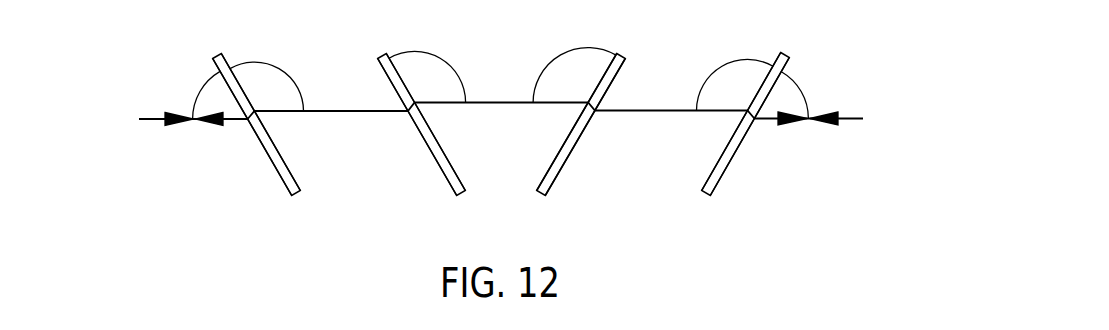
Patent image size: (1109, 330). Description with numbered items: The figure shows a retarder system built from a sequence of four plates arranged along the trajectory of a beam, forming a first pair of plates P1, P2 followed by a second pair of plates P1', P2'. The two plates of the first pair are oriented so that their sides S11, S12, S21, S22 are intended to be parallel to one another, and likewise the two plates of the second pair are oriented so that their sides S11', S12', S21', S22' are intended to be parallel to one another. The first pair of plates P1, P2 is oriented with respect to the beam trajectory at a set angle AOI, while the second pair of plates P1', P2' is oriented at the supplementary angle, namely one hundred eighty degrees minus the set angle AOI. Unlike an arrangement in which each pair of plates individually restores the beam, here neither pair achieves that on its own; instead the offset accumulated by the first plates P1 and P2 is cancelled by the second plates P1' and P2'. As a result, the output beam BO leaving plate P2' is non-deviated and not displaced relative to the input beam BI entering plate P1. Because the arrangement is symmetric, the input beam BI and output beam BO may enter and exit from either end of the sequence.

The plate P1 is at (212, 102).
The plate P2 is at (378, 102).
The plate P1' is at (628, 101).
The plate P2' is at (792, 101).
The side S11 is at (252, 159).
The side S12 is at (313, 122).
The side S21 is at (417, 159).
The side S22 is at (451, 154).
The side S11' is at (534, 122).
The side S12' is at (585, 160).
The side S21' is at (691, 122).
The side S22' is at (751, 159).
The input beam BI is at (177, 128).
The output beam BO is at (208, 130).
The set angle AOI is at (499, 92).